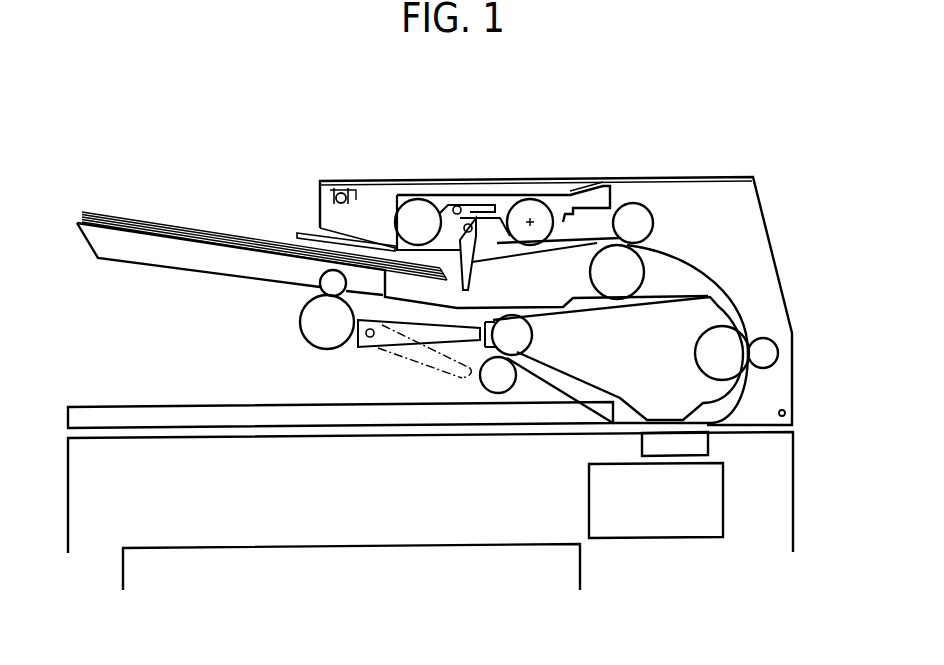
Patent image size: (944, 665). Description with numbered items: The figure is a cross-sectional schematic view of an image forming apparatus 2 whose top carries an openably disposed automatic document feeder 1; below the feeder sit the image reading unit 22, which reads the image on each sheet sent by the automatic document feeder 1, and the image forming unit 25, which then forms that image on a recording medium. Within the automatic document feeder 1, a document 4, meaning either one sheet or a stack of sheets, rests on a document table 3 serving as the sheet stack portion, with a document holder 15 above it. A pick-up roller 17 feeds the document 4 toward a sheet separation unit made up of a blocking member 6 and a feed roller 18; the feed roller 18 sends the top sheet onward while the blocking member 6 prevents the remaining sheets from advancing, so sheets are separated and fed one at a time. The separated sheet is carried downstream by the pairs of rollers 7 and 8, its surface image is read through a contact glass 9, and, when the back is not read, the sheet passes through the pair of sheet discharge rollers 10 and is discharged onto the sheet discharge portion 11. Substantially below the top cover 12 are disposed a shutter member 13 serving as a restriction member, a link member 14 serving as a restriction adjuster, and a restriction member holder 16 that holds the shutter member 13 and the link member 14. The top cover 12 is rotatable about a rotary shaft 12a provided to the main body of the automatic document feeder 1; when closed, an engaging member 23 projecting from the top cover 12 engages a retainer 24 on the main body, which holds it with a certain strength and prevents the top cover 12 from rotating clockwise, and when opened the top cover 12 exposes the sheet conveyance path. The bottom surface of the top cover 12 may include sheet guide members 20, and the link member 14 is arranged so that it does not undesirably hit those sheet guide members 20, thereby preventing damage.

The automatic document feeder 1 is at (672, 131).
The image forming apparatus 2 is at (808, 490).
The document table 3 is at (92, 242).
The document 4 is at (140, 215).
The blocking member 6 is at (563, 248).
The pair of rollers 7 is at (643, 276).
The pair of rollers 8 is at (767, 339).
The contact glass 9 is at (646, 444).
The pair of sheet discharge rollers 10 is at (512, 380).
The sheet discharge portion 11 is at (283, 406).
The top cover 12 is at (718, 177).
The rotary shaft 12a is at (787, 411).
The shutter member 13 is at (483, 240).
The link member 14 is at (463, 205).
The document holder 15 is at (305, 234).
The restriction member holder 16 is at (588, 184).
The pick-up roller 17 is at (420, 208).
The feed roller 18 is at (528, 203).
The sheet guide members 20 is at (712, 282).
The image reading unit 22 is at (590, 502).
The engaging member 23 is at (358, 195).
The retainer 24 is at (340, 188).
The image forming unit 25 is at (216, 548).